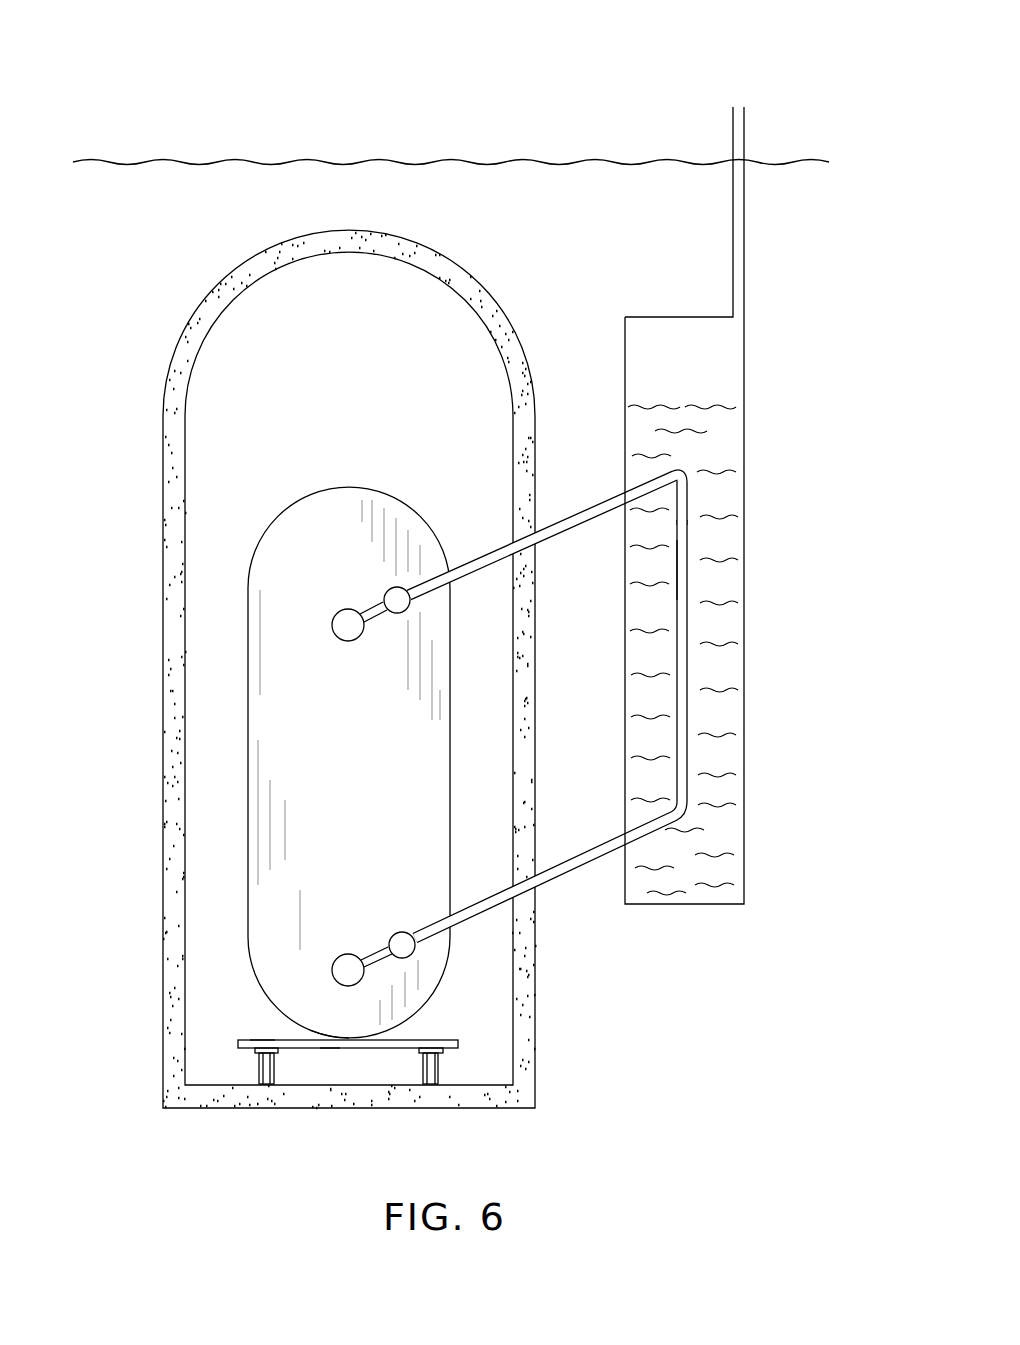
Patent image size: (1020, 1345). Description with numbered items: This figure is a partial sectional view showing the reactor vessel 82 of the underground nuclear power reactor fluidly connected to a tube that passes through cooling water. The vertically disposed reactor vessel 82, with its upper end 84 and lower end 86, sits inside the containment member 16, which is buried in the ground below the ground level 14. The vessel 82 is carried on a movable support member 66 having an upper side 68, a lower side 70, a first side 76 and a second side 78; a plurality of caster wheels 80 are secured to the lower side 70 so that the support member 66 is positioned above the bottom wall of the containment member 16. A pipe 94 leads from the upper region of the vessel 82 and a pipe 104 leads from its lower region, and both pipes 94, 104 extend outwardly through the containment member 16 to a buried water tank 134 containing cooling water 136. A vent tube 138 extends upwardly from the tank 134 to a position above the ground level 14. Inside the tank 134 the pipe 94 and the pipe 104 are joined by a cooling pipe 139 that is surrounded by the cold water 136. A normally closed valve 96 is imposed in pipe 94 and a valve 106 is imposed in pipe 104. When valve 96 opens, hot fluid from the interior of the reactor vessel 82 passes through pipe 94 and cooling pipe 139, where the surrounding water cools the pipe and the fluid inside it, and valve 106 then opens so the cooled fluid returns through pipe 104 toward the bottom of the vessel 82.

The ground level 14 is at (550, 162).
The containment member 16 is at (517, 329).
The reactor vessel 82 is at (343, 477).
The upper end 84 is at (297, 502).
The lower end 86 is at (328, 1040).
The valve 96 is at (400, 587).
The pipe 94 is at (586, 520).
The pipe 104 is at (577, 857).
The valve 106 is at (392, 934).
The water tank 134 is at (716, 534).
The cooling water 136 is at (707, 651).
The vent tube 138 is at (738, 253).
The cooling pipe 139 is at (683, 595).
The movable support member 66 is at (443, 1030).
The upper side 68 is at (262, 1040).
The lower side 70 is at (328, 1048).
The first side 76 is at (238, 1043).
The second side 78 is at (458, 1043).
The caster wheels 80 is at (433, 1077).